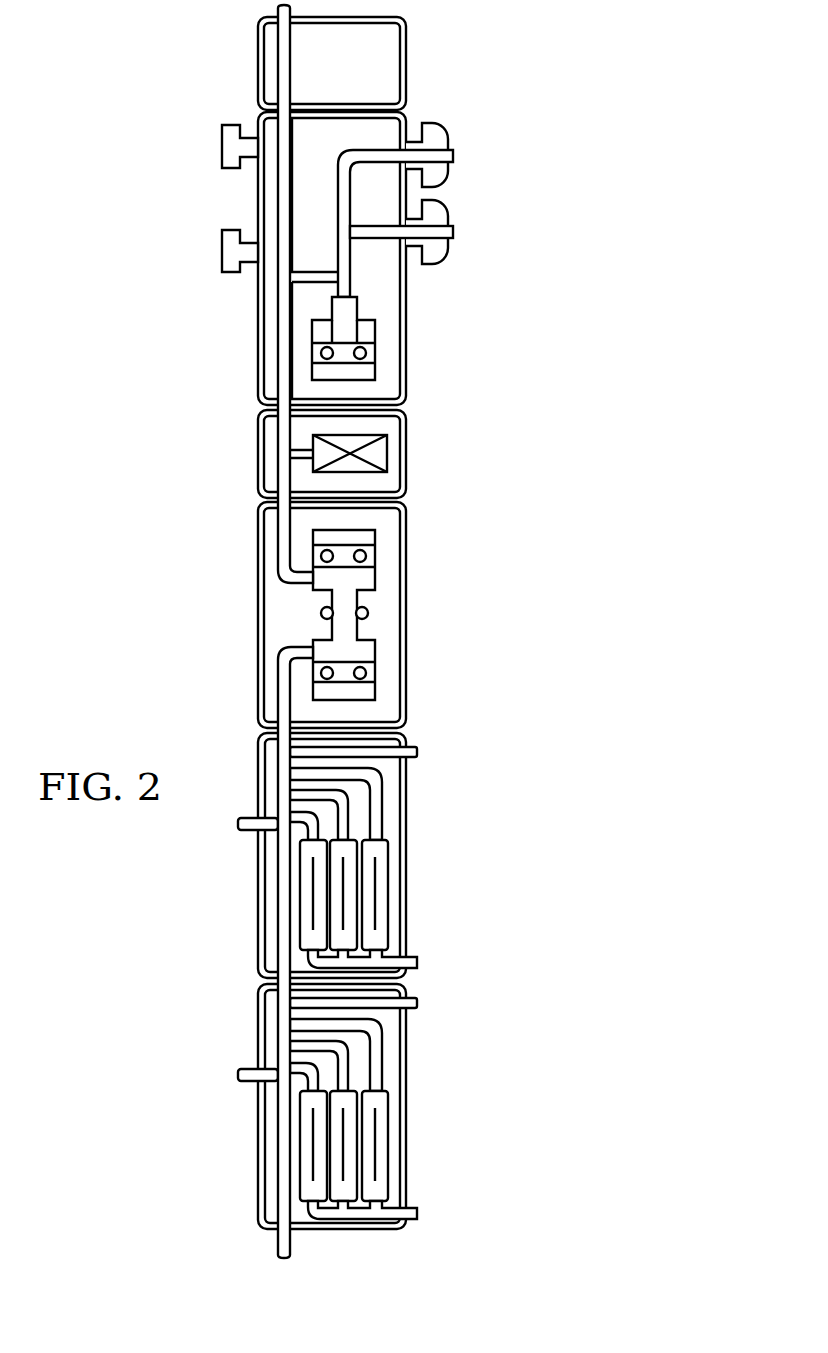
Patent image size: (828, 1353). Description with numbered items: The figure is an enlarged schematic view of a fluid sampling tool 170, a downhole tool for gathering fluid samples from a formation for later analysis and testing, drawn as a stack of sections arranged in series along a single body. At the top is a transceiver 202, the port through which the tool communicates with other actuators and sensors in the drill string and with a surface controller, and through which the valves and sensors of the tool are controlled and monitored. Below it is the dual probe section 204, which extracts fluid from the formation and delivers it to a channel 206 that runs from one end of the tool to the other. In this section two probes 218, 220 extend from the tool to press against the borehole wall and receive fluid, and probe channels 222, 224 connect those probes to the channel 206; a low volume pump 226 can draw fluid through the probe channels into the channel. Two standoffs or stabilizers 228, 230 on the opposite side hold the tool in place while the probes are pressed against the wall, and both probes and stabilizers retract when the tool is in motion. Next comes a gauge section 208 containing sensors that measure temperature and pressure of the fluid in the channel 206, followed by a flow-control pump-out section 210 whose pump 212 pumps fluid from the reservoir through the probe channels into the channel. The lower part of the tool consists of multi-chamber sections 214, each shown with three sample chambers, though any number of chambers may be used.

The fluid sampling tool 170 is at (620, 152).
The transceiver 202 is at (258, 65).
The dual probe section 204 is at (258, 317).
The channel 206 is at (273, 372).
The gauge section 208 is at (258, 457).
The flow-control pump-out section 210 is at (258, 615).
The pump 212 is at (370, 613).
The multi-chamber section 214 is at (406, 847).
The probe 218 is at (450, 145).
The probe 220 is at (452, 242).
The probe channel 222 is at (375, 148).
The probe channel 224 is at (373, 240).
The low volume pump 226 is at (375, 348).
The stabilizer 228 is at (222, 147).
The stabilizer 230 is at (222, 252).